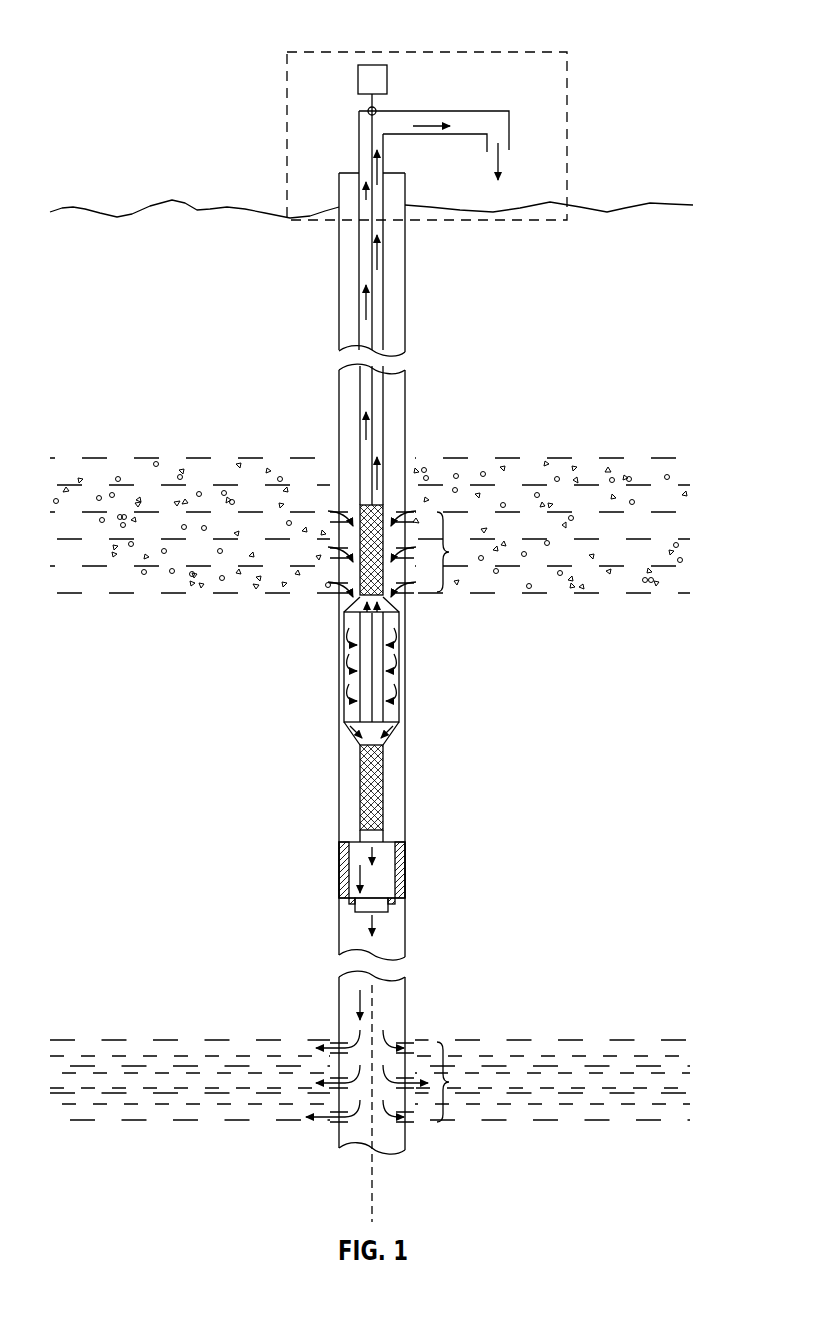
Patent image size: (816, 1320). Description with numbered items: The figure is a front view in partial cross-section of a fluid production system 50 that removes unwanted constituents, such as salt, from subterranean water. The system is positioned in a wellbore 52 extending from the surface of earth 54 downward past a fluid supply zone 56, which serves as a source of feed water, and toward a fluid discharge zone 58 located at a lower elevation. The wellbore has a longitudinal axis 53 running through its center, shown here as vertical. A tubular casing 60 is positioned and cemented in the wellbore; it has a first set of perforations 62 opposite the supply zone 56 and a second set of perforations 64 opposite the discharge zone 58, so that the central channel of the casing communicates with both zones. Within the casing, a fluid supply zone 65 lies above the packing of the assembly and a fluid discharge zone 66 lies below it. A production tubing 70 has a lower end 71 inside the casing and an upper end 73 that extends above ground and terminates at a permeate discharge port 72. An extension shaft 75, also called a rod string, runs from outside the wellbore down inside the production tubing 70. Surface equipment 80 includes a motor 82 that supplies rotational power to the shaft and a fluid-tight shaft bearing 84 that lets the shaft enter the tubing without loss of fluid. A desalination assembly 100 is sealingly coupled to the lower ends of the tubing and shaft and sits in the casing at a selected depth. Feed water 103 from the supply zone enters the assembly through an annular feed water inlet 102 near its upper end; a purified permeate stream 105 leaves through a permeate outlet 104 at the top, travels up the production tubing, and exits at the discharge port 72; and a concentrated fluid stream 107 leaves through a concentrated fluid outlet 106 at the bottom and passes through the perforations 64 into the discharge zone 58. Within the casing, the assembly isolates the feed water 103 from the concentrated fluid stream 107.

The fluid production system 50 is at (238, 38).
The wellbore 52 is at (339, 268).
The longitudinal axis 53 is at (377, 1007).
The surface of earth 54 is at (640, 212).
The fluid supply zone 56 is at (592, 470).
The fluid discharge zone 58 is at (597, 1056).
The tubular casing 60 is at (405, 265).
The first set of perforations 62 is at (456, 552).
The second set of perforations 64 is at (456, 1082).
The fluid supply zone within wellbore 65 is at (350, 458).
The fluid discharge zone within wellbore 66 is at (386, 1042).
The production tubing 70 is at (383, 310).
The lower end of production tubing 71 is at (383, 448).
The permeate discharge port 72 is at (510, 130).
The upper end of production tubing 73 is at (359, 148).
The extension shaft 75 is at (378, 403).
The surface equipment 80 is at (345, 52).
The motor 82 is at (372, 64).
The shaft bearing 84 is at (377, 109).
The desalination assembly 100 is at (363, 680).
The annular feed water inlet 102 is at (400, 597).
The feed water 103 is at (338, 552).
The permeate outlet 104 is at (385, 500).
The permeate stream 105 is at (500, 158).
The concentrated fluid outlet 106 is at (355, 910).
The concentrated fluid stream 107 is at (363, 882).